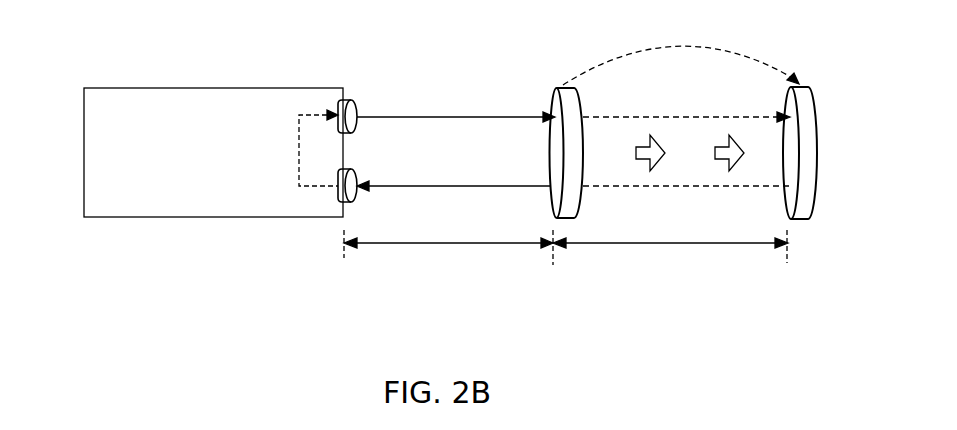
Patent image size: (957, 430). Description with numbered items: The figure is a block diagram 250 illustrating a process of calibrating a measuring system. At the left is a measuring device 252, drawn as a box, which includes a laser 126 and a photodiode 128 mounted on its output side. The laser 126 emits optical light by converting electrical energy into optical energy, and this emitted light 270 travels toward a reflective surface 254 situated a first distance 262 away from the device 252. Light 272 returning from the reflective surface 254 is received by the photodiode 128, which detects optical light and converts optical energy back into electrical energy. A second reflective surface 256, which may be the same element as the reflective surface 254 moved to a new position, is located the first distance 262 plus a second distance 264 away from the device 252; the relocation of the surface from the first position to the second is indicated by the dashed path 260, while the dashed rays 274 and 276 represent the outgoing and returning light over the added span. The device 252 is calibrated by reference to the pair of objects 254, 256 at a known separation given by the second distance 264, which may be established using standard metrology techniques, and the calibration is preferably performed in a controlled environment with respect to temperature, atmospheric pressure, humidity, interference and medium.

The laser 126 is at (344, 99).
The photodiode 128 is at (348, 203).
The block diagram 250 is at (143, 347).
The measuring device 252 is at (230, 164).
The reflective surface 254 is at (552, 102).
The reflective surface 256 is at (817, 125).
The lens separation path 260 is at (681, 50).
The first distance 262 is at (448, 251).
The second distance 264 is at (670, 251).
The emitted light beam 270 is at (478, 114).
The reflected light beam 272 is at (478, 184).
The transmitted light beam 274 is at (703, 116).
The returning light beam 276 is at (703, 188).